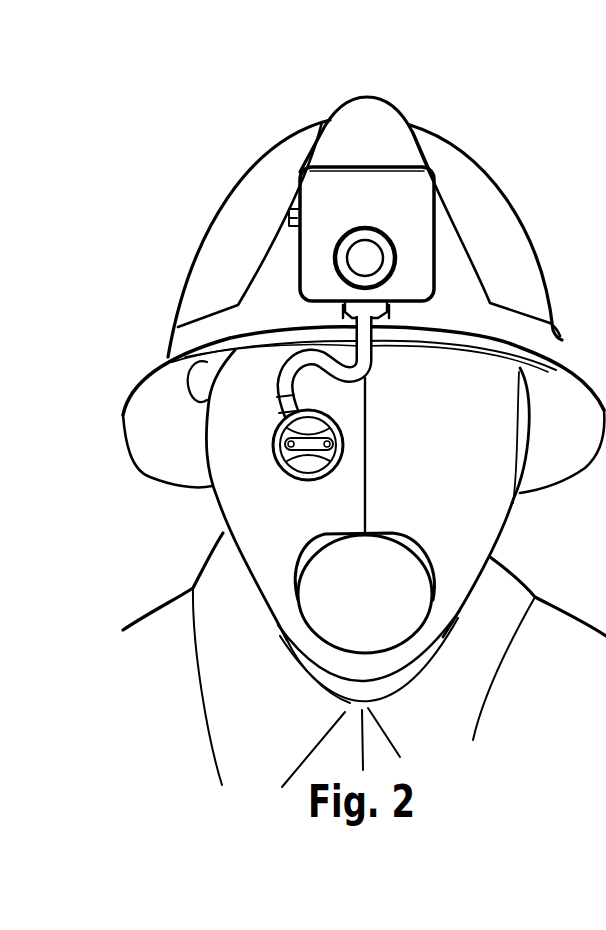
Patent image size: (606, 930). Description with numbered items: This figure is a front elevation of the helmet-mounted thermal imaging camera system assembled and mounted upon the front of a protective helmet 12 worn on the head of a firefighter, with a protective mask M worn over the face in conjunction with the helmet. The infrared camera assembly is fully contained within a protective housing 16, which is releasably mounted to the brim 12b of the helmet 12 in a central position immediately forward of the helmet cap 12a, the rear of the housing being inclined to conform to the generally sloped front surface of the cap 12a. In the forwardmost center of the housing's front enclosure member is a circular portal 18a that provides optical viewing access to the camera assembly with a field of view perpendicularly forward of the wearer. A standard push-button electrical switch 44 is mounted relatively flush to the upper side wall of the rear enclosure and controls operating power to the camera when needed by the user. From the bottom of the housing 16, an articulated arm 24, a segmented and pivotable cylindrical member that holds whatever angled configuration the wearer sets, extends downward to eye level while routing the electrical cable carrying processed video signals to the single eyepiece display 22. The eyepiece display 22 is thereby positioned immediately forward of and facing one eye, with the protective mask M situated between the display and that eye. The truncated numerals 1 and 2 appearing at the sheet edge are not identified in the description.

The protective helmet 12 is at (343, 93).
The helmet cap 12a is at (447, 140).
The brim 12b is at (143, 372).
The protective housing 16 is at (303, 163).
The push-button electrical switch 44 is at (289, 212).
The circular portal 18a is at (337, 252).
The articulated arm 24 is at (281, 378).
The single eyepiece display 22 is at (278, 462).
The head-mounted system 1 is at (437, 222).
The cut-off reference 2 is at (600, 409).
The protective mask M is at (497, 537).